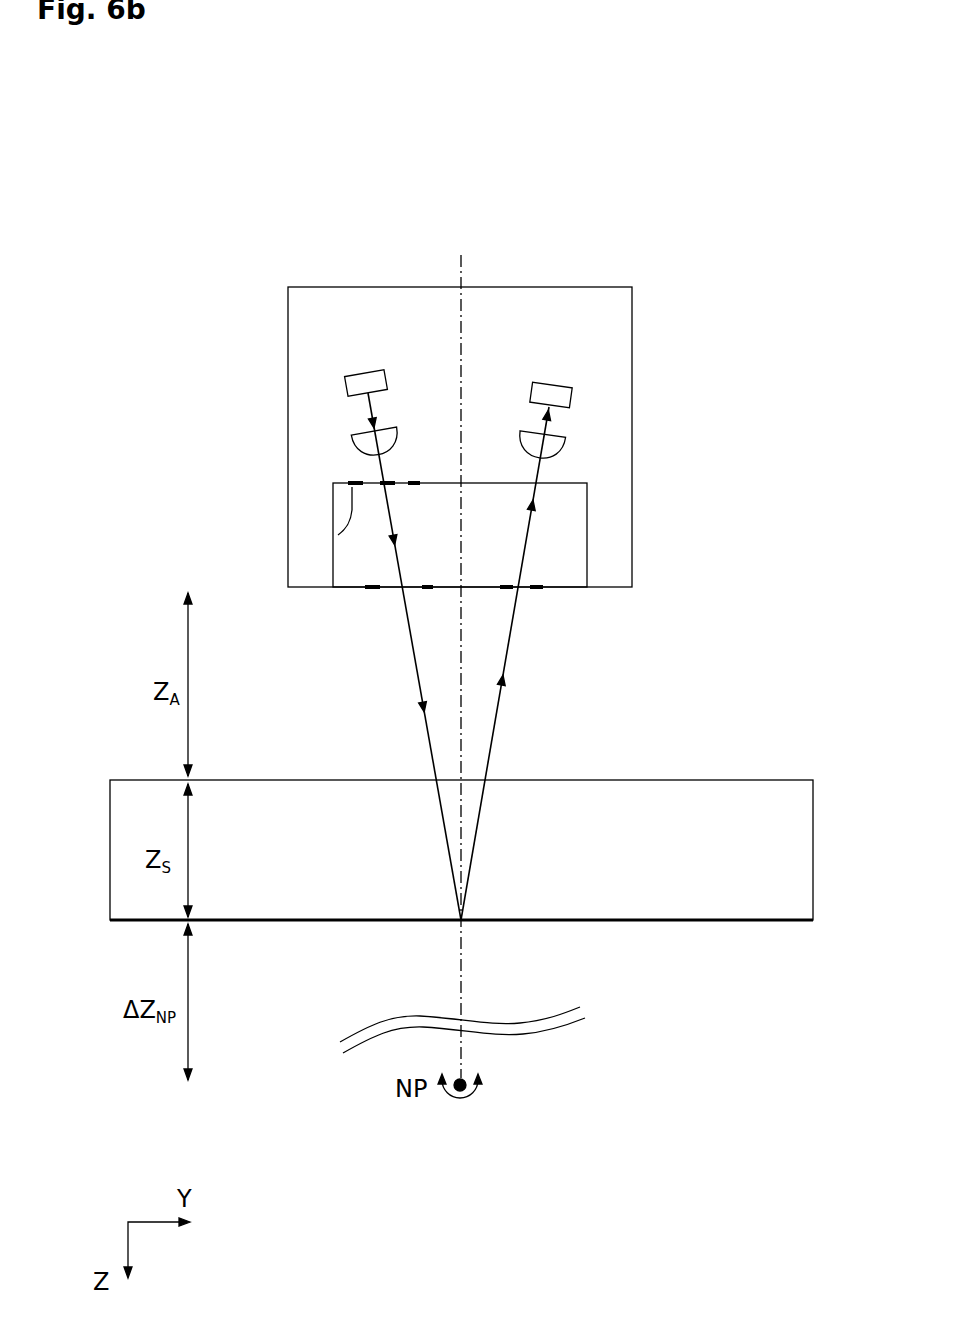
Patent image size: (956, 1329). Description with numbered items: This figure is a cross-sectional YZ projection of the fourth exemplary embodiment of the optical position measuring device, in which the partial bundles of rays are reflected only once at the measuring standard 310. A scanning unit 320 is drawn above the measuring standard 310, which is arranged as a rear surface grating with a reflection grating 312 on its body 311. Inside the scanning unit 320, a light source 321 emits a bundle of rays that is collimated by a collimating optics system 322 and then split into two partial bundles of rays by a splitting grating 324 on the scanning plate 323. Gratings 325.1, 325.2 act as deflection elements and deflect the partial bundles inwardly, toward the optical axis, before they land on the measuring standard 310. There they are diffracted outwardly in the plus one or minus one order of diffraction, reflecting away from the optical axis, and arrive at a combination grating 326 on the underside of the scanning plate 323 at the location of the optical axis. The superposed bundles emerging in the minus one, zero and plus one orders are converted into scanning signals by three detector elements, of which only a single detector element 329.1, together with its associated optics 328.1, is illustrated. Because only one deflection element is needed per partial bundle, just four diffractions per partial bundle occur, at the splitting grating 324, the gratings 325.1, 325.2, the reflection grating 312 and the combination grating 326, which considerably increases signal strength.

The measuring standard 310 is at (473, 884).
The sample body 311 is at (793, 892).
The reflection grating 312 is at (713, 923).
The measuring head 320 is at (276, 413).
The light source 321 is at (362, 382).
The collimating optics system 322 is at (356, 440).
The scanning plate 323 is at (571, 551).
The splitting grating 324 is at (338, 535).
The grating 325.1 is at (375, 588).
The grating 325.2 is at (363, 635).
The combination grating 326 is at (560, 588).
The detection lens 328.1 is at (555, 443).
The detector element 329.1 is at (556, 385).